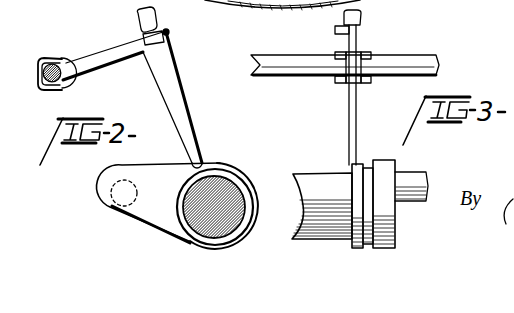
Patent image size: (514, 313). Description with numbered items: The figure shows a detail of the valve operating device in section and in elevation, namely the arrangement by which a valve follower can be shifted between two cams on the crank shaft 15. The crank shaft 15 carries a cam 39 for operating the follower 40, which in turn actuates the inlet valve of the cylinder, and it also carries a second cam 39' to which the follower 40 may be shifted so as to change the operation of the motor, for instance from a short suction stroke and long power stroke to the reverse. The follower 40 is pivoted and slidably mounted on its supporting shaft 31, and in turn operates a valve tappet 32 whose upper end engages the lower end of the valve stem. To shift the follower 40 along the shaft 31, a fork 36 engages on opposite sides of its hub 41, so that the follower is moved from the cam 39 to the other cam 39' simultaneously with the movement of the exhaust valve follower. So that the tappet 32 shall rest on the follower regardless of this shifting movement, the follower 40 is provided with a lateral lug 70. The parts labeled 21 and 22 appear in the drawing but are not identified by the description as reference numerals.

In FIG. 2, the crank shaft 15 is at (232, 222).
In FIG. 3, the crank shaft 15 is at (308, 175).
In FIG. 2, the plate 21 is at (130, 218).
In FIG. 2, the shaft 22 is at (110, 192).
In FIG. 3, the shaft 22 is at (429, 184).
In FIG. 2, the shaft 31 is at (64, 78).
In FIG. 3, the shaft 31 is at (411, 63).
In FIG. 2, the valve tappet 32 is at (136, 20).
In FIG. 3, the valve tappet 32 is at (362, 13).
In FIG. 2, the fork 36 is at (40, 58).
In FIG. 3, the fork 36 is at (335, 81).
In FIG. 2, the cam 39 is at (191, 215).
In FIG. 3, the cam 39 is at (391, 209).
In FIG. 2, the cam 39' is at (229, 192).
In FIG. 3, the cam 39' is at (396, 199).
In FIG. 2, the follower 40 is at (173, 75).
In FIG. 3, the follower 40 is at (351, 112).
In FIG. 3, the hub 41 is at (345, 53).
In FIG. 2, the lateral lug 70 is at (169, 32).
In FIG. 3, the lateral lug 70 is at (335, 30).